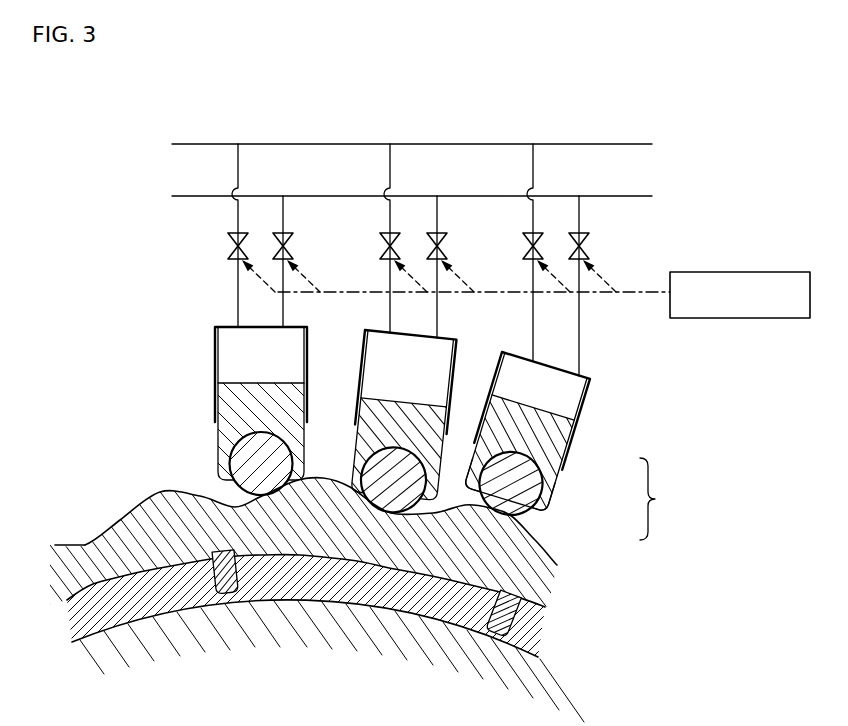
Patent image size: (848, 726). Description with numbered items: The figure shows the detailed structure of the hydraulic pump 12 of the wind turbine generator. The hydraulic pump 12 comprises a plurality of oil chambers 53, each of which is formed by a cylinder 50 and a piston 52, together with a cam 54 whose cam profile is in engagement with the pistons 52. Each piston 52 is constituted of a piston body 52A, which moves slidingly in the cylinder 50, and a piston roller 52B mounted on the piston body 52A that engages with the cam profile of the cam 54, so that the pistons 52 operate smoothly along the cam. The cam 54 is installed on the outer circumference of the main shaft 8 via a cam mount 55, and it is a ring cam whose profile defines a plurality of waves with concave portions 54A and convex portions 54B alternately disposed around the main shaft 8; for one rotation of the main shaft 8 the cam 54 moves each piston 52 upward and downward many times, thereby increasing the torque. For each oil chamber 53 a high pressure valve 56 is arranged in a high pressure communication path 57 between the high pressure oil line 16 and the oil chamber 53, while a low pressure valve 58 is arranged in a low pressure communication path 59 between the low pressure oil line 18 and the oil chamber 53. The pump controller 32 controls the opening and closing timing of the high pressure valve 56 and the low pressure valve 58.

The main shaft 8 is at (106, 651).
The hydraulic pump 12 is at (64, 354).
The high pressure oil line 16 is at (652, 196).
The low pressure oil line 18 is at (652, 144).
The pump controller 32 is at (780, 272).
The cylinder 50 is at (216, 352).
The piston 52 is at (435, 487).
The piston body 52A is at (560, 488).
The piston roller 52B is at (540, 517).
The oil chamber 53 is at (232, 370).
The cam 54 is at (346, 541).
The concave portion 54A is at (82, 544).
The convex portion 54B is at (152, 490).
The cam mount 55 is at (97, 590).
The high pressure valve 56 is at (295, 252).
The high pressure communication path 57 is at (283, 212).
The low pressure valve 58 is at (232, 257).
The low pressure communication path 59 is at (238, 165).